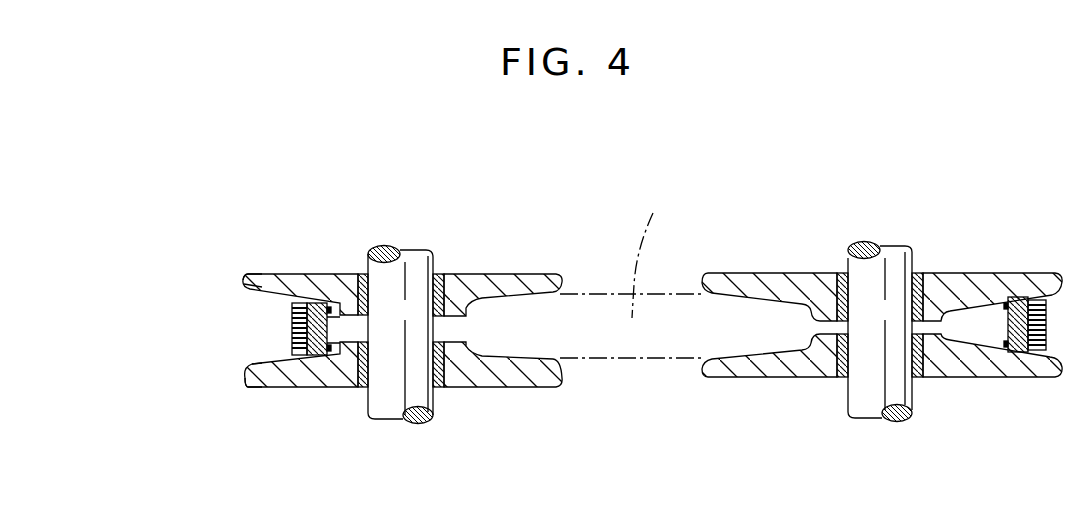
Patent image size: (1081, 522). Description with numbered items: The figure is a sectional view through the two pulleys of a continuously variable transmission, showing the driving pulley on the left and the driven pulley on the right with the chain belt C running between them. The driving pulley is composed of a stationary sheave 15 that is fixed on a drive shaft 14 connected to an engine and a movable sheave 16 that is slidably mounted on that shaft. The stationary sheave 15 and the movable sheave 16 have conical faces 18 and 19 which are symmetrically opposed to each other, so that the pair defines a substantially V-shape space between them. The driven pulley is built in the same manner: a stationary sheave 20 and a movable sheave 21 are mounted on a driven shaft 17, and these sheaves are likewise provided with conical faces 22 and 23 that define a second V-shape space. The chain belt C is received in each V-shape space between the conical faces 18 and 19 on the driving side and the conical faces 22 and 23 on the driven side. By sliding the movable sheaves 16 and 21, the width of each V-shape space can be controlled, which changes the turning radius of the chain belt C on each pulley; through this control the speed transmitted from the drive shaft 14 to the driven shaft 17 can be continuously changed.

The drive shaft 14 is at (410, 263).
The stationary sheave 15 is at (333, 275).
The movable sheave 16 is at (325, 389).
The driven shaft 17 is at (879, 265).
The conical face 18 is at (242, 290).
The conical face 19 is at (253, 367).
The stationary sheave 20 is at (780, 280).
The movable sheave 21 is at (768, 370).
The conical face 22 is at (977, 308).
The conical face 23 is at (980, 335).
The chain belt C is at (631, 271).